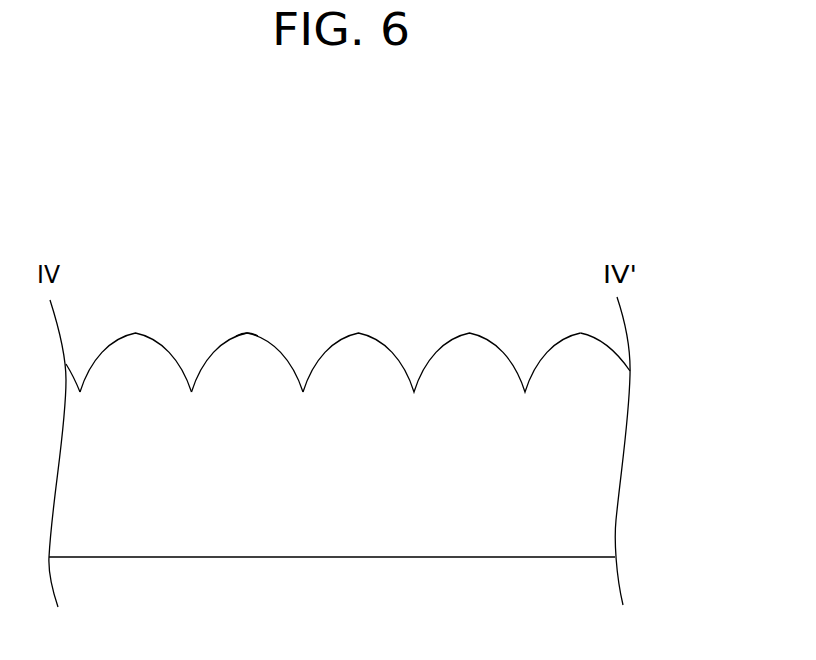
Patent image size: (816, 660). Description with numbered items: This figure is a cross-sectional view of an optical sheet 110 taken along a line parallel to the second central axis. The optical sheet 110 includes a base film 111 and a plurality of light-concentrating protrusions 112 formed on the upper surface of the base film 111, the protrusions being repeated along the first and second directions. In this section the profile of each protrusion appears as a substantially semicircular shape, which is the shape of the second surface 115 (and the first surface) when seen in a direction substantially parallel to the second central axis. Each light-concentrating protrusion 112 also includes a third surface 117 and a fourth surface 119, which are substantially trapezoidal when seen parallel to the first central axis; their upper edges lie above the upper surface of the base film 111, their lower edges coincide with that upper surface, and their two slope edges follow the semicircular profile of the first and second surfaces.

The optical sheet 110 is at (409, 435).
The base film 111 is at (597, 507).
The light-concentrating protrusions 112 is at (387, 327).
The second surface 115 is at (246, 347).
The third surface 117 is at (208, 347).
The fourth surface 119 is at (286, 348).